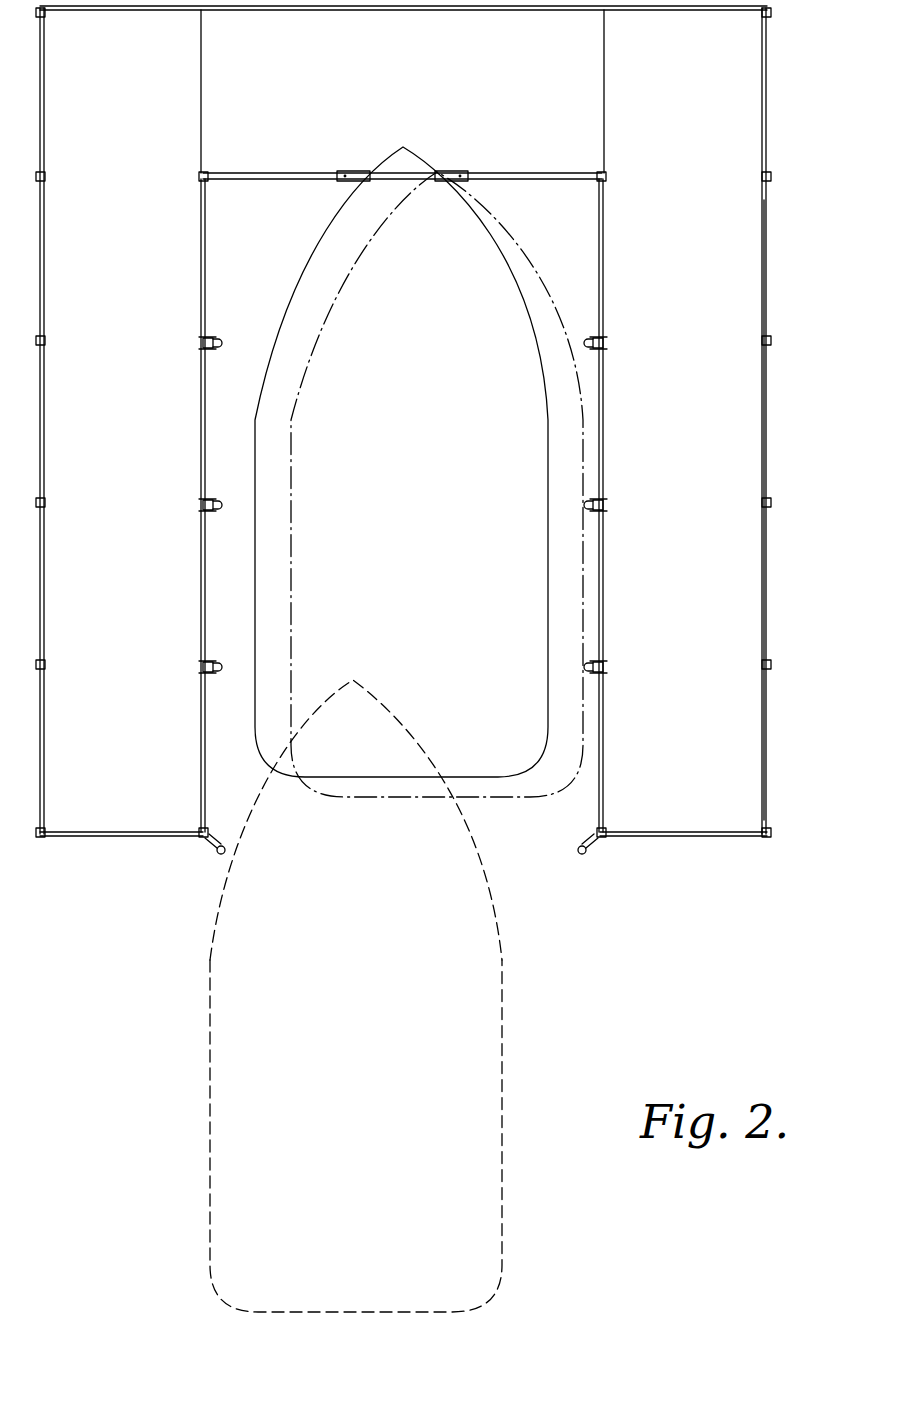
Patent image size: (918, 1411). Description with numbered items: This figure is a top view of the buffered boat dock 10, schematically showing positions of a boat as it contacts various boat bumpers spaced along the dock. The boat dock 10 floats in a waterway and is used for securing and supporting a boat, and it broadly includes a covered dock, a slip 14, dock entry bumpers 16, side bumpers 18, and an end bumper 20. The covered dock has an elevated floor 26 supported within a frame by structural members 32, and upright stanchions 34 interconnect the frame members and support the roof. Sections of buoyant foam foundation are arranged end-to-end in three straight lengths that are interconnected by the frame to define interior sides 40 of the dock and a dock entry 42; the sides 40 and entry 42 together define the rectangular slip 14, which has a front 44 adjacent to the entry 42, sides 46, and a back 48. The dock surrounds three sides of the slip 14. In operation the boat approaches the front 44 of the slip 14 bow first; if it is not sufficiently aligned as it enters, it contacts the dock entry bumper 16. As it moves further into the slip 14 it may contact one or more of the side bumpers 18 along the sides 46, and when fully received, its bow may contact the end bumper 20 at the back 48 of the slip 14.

The buffered boat dock 10 is at (718, 890).
The slip 14 is at (413, 450).
The dock entry bumpers 16 is at (590, 852).
The side bumpers 18 is at (602, 674).
The end bumper 20 is at (455, 172).
The elevated floor 26 is at (745, 100).
The structural members 32 is at (762, 572).
The upright stanchions 34 is at (762, 667).
The interior sides 40 is at (290, 176).
The dock entry 42 is at (529, 885).
The front 44 is at (402, 868).
The sides 46 is at (218, 463).
The back 48 is at (401, 240).